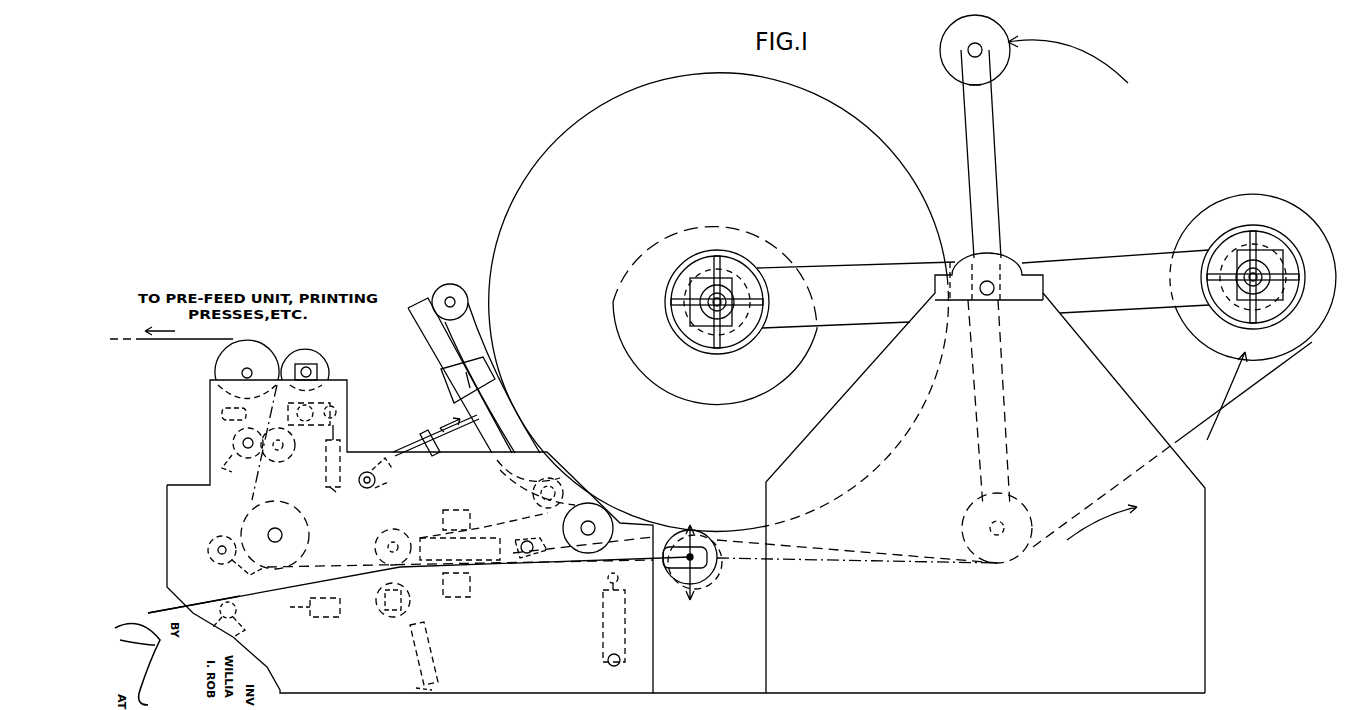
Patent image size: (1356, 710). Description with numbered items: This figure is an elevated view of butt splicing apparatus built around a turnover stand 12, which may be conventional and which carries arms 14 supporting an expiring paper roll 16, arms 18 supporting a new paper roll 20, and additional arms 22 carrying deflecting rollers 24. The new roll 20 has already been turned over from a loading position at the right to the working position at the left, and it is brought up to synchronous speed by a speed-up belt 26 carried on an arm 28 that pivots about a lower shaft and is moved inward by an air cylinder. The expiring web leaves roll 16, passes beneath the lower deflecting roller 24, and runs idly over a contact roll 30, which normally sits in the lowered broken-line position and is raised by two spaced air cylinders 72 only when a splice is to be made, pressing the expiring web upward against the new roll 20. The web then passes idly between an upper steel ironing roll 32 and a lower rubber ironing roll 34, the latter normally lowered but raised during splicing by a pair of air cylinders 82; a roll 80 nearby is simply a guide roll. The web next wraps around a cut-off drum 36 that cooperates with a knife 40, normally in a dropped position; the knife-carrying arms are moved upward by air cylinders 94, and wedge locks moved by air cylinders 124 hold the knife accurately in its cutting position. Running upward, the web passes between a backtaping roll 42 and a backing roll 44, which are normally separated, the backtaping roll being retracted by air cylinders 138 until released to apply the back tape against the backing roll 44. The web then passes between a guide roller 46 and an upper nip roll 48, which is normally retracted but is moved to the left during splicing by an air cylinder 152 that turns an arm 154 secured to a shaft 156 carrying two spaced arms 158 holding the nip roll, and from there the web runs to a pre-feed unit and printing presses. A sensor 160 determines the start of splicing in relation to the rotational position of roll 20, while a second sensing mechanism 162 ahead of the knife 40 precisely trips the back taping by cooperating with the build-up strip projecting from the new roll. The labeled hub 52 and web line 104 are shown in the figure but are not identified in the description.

The turnover stand 12 is at (996, 681).
The arms 14 is at (1100, 258).
The paper roll 16 is at (1255, 195).
The arms 18 is at (862, 268).
The paper roll 20 is at (888, 142).
The additional arms 22 is at (1000, 182).
The deflecting rollers 24 is at (1010, 42).
The speed-up belt 26 is at (478, 300).
The arm 28 is at (440, 340).
The contact roll 30 is at (530, 503).
The ironing roll 32 is at (408, 443).
The ironing roll 34 is at (390, 622).
The cut-off drum 36 is at (312, 530).
The knife 40 is at (262, 566).
The backtaping roll 42 is at (222, 438).
The backing roll 44 is at (287, 466).
The guide roller 46 is at (222, 364).
The upper nip roll 48 is at (325, 365).
The hub 52 is at (750, 263).
The air cylinders 72 is at (625, 630).
The guide roll 80 is at (602, 506).
The air cylinders 82 is at (440, 645).
The air cylinders 94 is at (242, 637).
The web 104 is at (170, 600).
The air cylinders 124 is at (335, 625).
The air cylinders 138 is at (222, 414).
The air cylinder 152 is at (350, 441).
The arm 154 is at (350, 411).
The shaft 156 is at (348, 381).
The arms 158 is at (307, 363).
The sensor 160 is at (493, 370).
The second sensing mechanism 162 is at (478, 590).